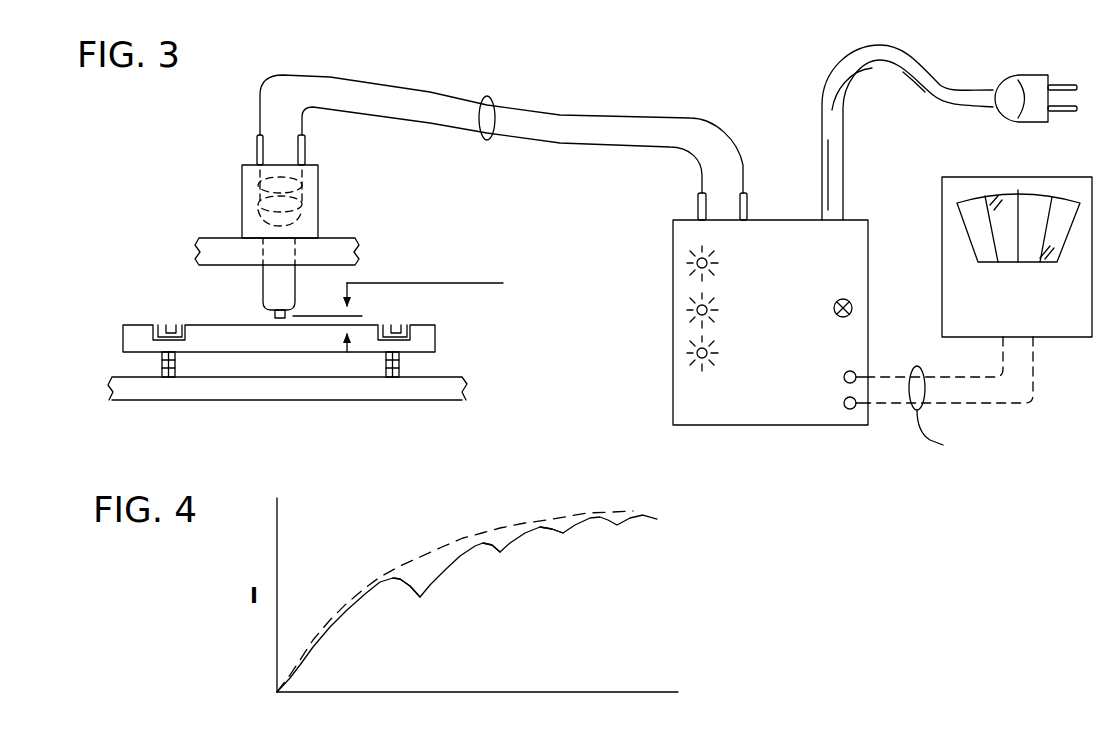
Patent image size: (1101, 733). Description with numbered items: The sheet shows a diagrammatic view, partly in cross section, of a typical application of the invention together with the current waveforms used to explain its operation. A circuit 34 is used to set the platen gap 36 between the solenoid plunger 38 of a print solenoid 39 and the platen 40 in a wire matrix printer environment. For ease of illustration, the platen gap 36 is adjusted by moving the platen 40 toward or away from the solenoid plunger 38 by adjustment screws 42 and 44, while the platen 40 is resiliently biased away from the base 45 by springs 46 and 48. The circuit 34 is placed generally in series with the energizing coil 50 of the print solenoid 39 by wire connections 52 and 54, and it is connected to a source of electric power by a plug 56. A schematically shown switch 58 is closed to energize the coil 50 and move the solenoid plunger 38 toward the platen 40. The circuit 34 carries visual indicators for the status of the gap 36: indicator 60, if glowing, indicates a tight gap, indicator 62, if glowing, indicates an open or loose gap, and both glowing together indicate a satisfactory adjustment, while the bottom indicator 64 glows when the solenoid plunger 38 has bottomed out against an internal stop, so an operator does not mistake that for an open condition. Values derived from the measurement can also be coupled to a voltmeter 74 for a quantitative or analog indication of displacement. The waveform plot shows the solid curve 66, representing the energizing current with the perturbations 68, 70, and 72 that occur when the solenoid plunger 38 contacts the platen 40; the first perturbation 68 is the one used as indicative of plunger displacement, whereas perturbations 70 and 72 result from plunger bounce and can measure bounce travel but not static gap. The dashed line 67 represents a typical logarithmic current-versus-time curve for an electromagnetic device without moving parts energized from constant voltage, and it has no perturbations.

In FIG. 3, the circuit 34 is at (662, 417).
In FIG. 3, the platen gap 36 is at (435, 305).
In FIG. 3, the solenoid plunger 38 is at (283, 318).
In FIG. 3, the print solenoid 39 is at (242, 183).
In FIG. 3, the platen 40 is at (437, 330).
In FIG. 3, the adjustment screw 42 is at (388, 325).
In FIG. 3, the adjustment screw 44 is at (163, 323).
In FIG. 3, the base 45 is at (177, 390).
In FIG. 3, the spring 46 is at (176, 363).
In FIG. 3, the spring 48 is at (384, 367).
In FIG. 3, the energizing coil 50 is at (311, 193).
In FIG. 3, the wire connection 52 is at (623, 117).
In FIG. 3, the wire connection 54 is at (597, 146).
In FIG. 3, the plug 56 is at (1013, 73).
In FIG. 3, the switch 58 is at (853, 304).
In FIG. 3, the indicator 60 is at (695, 260).
In FIG. 3, the indicator 62 is at (695, 307).
In FIG. 3, the bottom indicator 64 is at (695, 350).
In FIG. 4, the curve 66 is at (452, 577).
In FIG. 4, the dashed line 67 is at (497, 530).
In FIG. 4, the first perturbation 68 is at (420, 598).
In FIG. 4, the second perturbation 70 is at (502, 552).
In FIG. 4, the third perturbation 72 is at (563, 534).
In FIG. 3, the voltmeter 74 is at (953, 177).